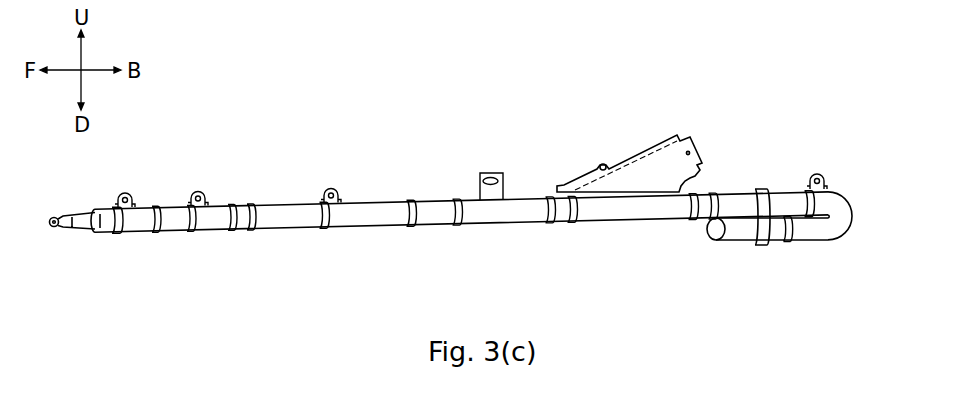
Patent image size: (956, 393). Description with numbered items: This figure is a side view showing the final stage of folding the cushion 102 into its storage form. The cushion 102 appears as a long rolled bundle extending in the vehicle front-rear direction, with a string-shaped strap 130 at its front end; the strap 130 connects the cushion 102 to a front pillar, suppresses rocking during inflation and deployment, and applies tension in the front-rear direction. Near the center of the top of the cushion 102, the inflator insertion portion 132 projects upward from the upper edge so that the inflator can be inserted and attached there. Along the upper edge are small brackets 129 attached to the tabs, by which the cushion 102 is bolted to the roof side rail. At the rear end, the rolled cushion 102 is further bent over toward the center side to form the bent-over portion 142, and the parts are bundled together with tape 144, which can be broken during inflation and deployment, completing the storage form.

The cushion 102 is at (198, 163).
The strap 130 is at (75, 220).
The inflator insertion portion 132 is at (633, 152).
The bent-over portion 142 is at (827, 248).
The tape 144 is at (769, 202).
The bracket 129 is at (818, 171).